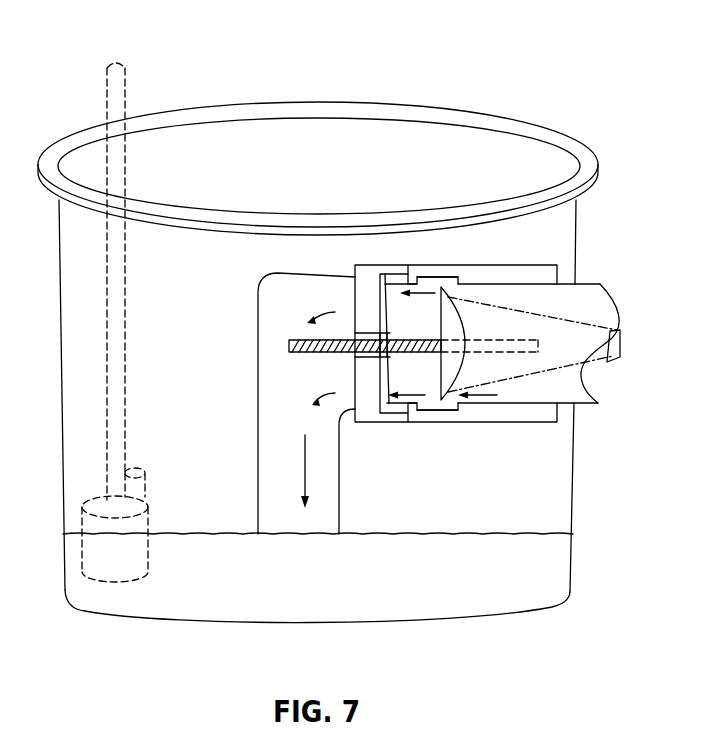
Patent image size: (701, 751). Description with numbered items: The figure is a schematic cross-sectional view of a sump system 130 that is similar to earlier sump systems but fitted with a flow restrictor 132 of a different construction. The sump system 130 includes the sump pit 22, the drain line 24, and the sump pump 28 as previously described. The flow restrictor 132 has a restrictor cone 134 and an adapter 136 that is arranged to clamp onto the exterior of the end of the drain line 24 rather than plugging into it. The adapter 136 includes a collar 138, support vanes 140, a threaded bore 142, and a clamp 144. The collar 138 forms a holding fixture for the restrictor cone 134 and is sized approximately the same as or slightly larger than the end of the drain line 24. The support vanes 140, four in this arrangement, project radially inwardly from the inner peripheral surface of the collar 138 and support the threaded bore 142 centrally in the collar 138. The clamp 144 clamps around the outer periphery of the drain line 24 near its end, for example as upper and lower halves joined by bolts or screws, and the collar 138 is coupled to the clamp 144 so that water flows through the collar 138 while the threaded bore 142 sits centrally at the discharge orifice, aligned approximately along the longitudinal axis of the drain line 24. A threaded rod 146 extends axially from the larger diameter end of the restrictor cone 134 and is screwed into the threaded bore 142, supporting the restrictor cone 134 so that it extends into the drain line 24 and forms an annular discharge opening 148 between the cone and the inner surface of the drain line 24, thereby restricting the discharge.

The sump pit 22 is at (488, 618).
The drain line 24 is at (588, 400).
The sump pump 28 is at (82, 552).
The sump system 130 is at (267, 68).
The flow restrictor 132 is at (313, 263).
The restrictor cone 134 is at (612, 343).
The adapter 136 is at (381, 368).
The collar 138 is at (385, 266).
The support vanes 140 is at (385, 327).
The threaded bore 142 is at (364, 358).
The clamp 144 is at (477, 265).
The threaded rod 146 is at (307, 347).
The annular discharge opening 148 is at (483, 398).